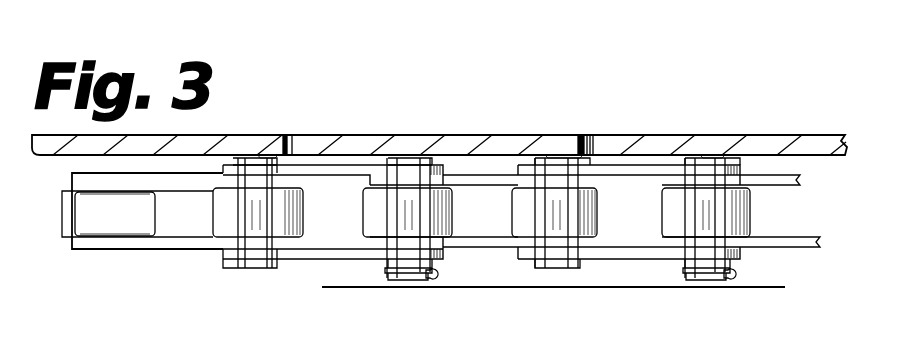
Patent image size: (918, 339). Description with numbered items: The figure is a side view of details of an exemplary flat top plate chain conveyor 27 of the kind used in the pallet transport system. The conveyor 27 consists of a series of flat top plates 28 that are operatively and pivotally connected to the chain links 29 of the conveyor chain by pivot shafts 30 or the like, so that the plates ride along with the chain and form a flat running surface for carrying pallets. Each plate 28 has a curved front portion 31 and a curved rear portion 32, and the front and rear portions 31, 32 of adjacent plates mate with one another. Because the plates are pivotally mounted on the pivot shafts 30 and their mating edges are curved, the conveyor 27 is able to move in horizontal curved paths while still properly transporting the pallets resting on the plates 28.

The flat top plate chain conveyor 27 is at (252, 106).
The flat top plates 28 is at (258, 135).
The chain link 29 is at (473, 248).
The pivot shafts 30 is at (410, 162).
The curved front portion 31 is at (583, 135).
The curved rear portion 32 is at (591, 135).